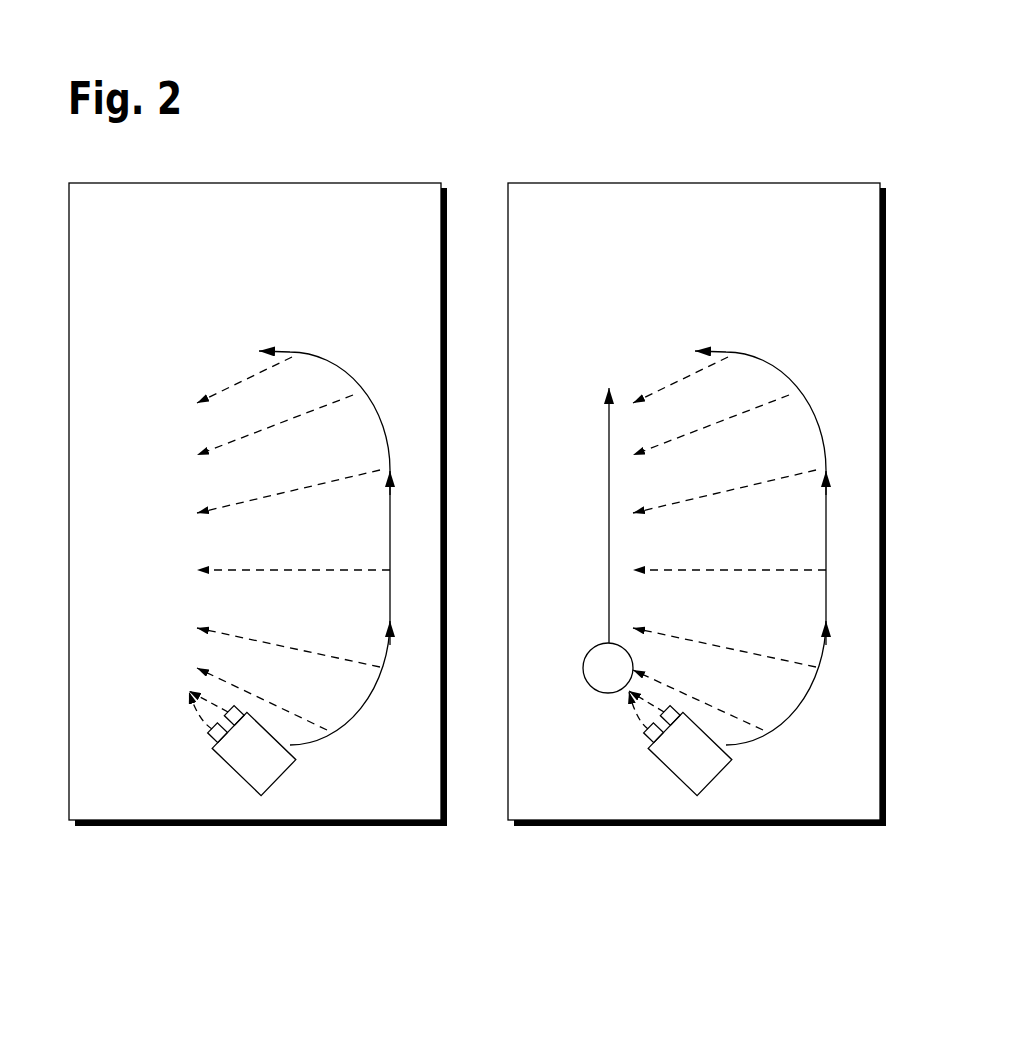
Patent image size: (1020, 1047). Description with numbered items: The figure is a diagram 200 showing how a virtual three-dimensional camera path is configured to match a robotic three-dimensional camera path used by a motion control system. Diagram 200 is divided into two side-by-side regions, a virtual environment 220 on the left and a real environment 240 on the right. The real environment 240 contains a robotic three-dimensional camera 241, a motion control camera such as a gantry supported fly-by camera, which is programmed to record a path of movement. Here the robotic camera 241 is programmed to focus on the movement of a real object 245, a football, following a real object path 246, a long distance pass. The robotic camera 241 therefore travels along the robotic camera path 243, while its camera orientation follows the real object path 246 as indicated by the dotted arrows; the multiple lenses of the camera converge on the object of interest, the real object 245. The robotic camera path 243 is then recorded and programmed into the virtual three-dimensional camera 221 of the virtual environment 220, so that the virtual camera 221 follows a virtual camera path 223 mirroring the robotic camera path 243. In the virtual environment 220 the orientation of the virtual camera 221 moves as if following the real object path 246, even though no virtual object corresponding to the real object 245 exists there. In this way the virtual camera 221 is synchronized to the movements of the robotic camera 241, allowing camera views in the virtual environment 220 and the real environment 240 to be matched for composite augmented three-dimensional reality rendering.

The diagram 200 is at (803, 141).
The virtual environment 220 is at (375, 214).
The virtual 3D camera 221 is at (245, 794).
The virtual camera path 223 is at (357, 317).
The real environment 240 is at (807, 214).
The robotic 3D camera 241 is at (677, 794).
The robotic camera path 243 is at (797, 317).
The real object 245 is at (580, 712).
The real object path 246 is at (609, 502).